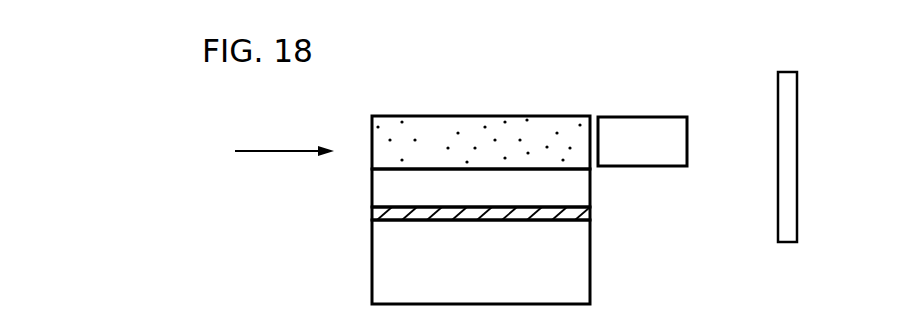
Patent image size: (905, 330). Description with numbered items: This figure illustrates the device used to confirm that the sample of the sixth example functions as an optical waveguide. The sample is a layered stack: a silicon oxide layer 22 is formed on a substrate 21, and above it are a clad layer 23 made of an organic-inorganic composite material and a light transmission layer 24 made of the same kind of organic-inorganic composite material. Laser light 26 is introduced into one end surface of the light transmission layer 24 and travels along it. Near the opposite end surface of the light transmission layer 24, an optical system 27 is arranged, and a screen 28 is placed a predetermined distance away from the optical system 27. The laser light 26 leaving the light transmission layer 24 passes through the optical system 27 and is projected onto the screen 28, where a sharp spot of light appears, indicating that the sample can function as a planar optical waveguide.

The substrate 21 is at (578, 264).
The silicon oxide layer 22 is at (590, 213).
The clad layer 23 is at (406, 190).
The light transmission layer 24 is at (428, 128).
The laser light 26 is at (273, 152).
The optical system 27 is at (672, 137).
The screen 28 is at (785, 240).